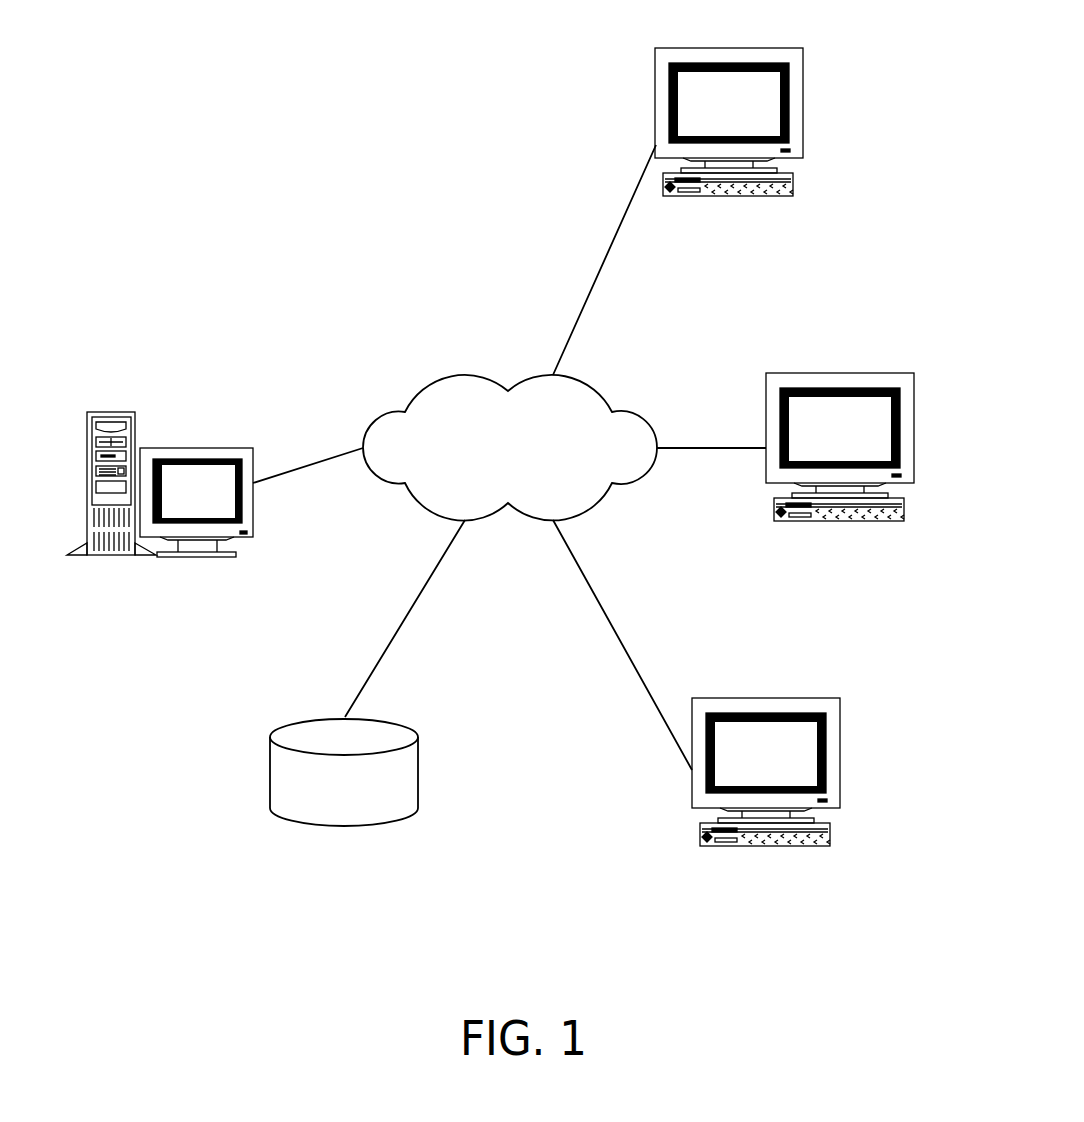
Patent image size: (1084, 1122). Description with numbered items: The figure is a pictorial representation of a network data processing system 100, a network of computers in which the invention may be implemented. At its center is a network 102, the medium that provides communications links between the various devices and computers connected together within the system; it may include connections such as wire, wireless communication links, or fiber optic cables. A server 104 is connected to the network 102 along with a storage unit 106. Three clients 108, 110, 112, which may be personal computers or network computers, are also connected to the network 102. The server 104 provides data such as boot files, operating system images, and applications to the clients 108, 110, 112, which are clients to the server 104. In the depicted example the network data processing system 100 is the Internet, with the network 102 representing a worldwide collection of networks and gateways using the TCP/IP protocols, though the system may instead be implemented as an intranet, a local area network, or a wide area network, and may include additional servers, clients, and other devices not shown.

The network data processing system 100 is at (527, 778).
The network 102 is at (463, 373).
The server 104 is at (160, 455).
The storage unit 106 is at (327, 817).
The client 108 is at (658, 53).
The client 110 is at (773, 383).
The client 112 is at (832, 707).